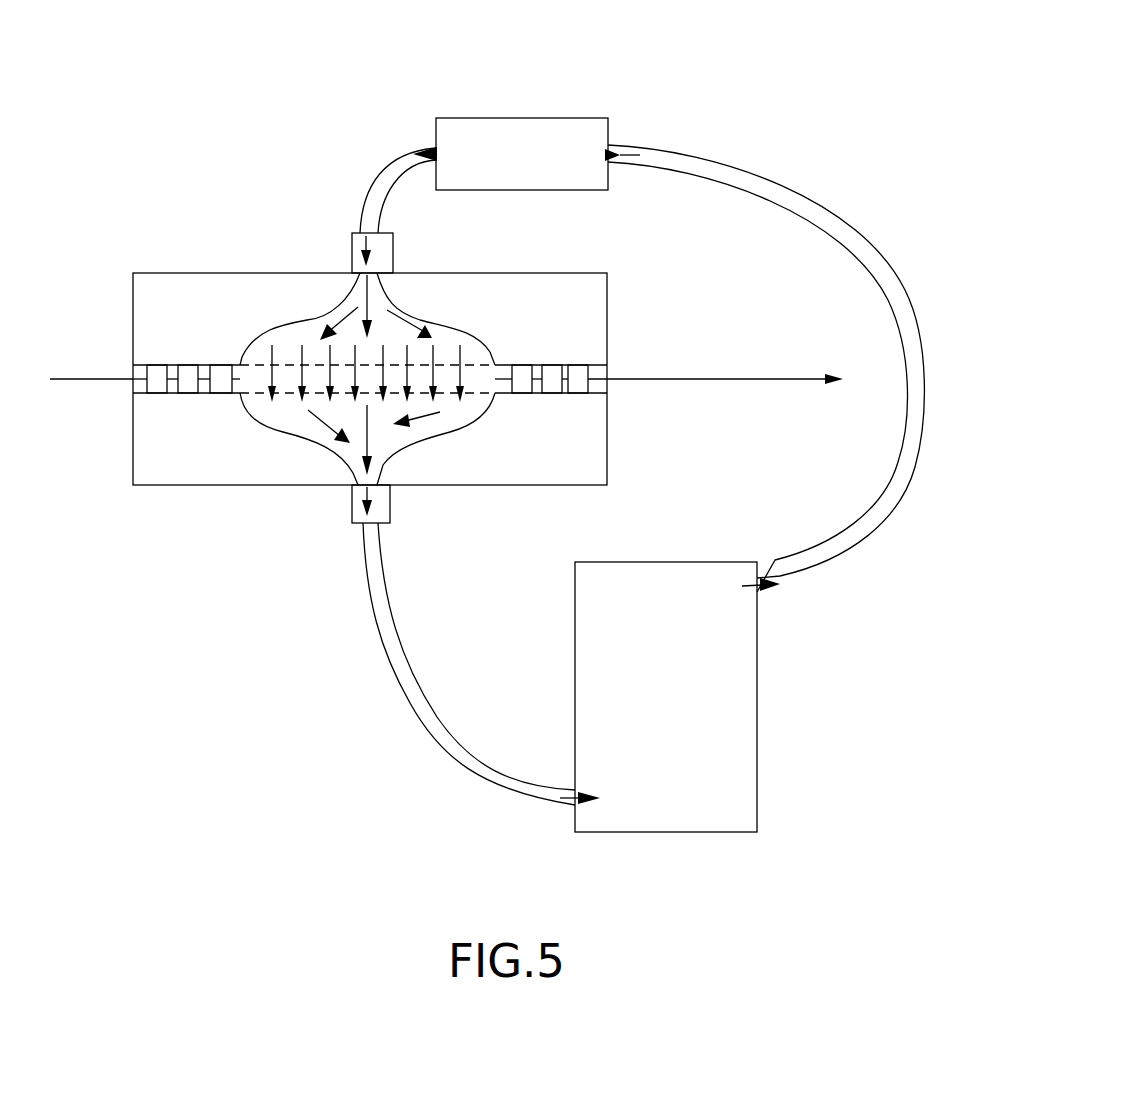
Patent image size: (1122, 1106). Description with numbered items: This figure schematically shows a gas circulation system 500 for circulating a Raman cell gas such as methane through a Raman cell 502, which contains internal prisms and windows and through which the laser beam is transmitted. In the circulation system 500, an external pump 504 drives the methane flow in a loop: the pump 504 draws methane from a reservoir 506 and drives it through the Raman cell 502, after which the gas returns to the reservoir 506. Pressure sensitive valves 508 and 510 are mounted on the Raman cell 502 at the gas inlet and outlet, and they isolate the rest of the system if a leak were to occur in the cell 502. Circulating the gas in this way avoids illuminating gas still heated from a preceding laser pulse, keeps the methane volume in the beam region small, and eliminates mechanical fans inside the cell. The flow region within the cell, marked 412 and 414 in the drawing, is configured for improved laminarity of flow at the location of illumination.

The circulation system 500 is at (690, 72).
The Raman cell 502 is at (557, 273).
The external pump 504 is at (540, 118).
The reservoir 506 is at (757, 688).
The pressure sensitive valve 508 is at (352, 245).
The pressure sensitive valve 510 is at (352, 510).
The gas flow 412 is at (448, 362).
The laser beam interaction region 414 is at (288, 393).